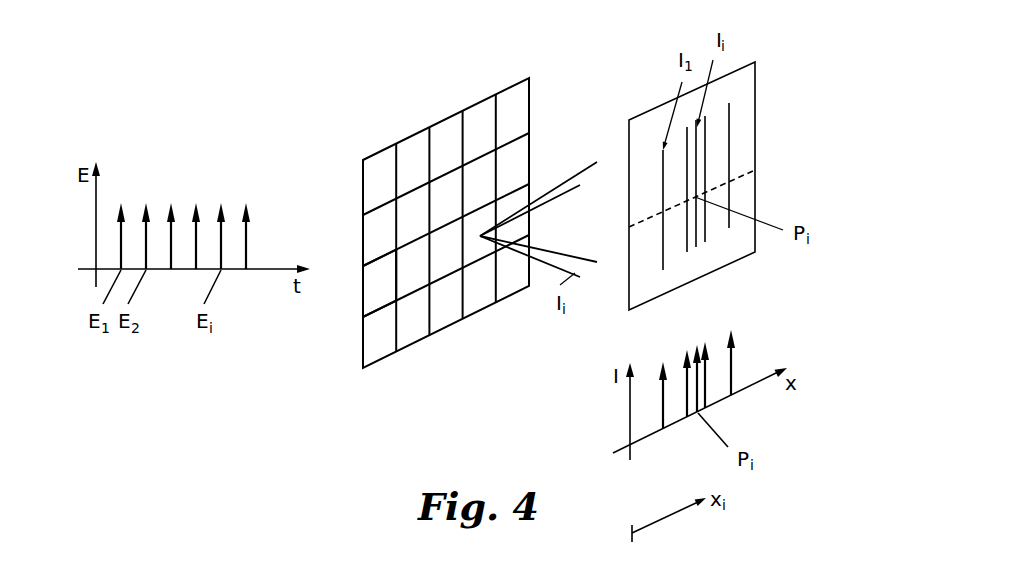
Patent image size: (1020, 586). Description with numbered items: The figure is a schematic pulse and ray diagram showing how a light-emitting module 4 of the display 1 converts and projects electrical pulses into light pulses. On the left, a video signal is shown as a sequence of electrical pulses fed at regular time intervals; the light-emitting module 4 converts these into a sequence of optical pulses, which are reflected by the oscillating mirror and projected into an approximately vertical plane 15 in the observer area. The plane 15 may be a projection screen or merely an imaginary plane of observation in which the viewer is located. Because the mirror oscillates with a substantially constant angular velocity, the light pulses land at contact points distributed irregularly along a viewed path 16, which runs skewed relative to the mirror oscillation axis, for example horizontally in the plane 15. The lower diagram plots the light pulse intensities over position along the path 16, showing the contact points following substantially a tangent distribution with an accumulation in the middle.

The display 1 is at (362, 345).
The light-emitting module 4 is at (385, 238).
The plane 15 is at (755, 127).
The viewed path 16 is at (743, 173).